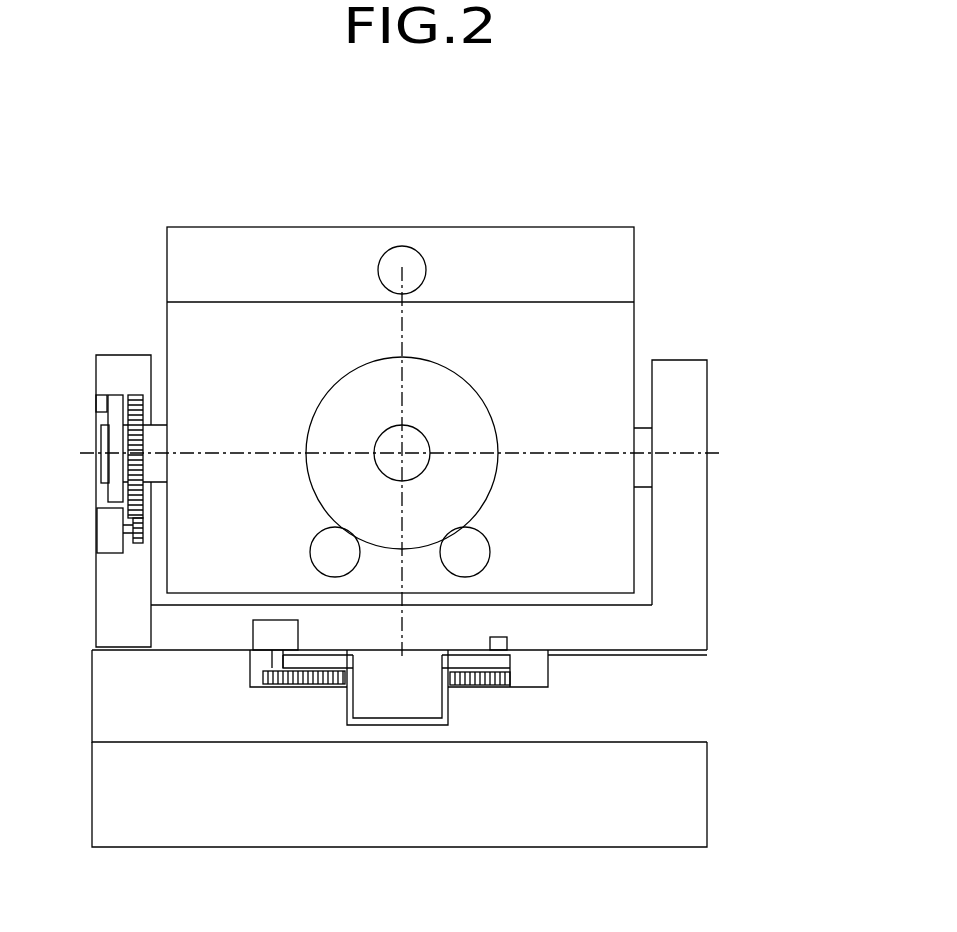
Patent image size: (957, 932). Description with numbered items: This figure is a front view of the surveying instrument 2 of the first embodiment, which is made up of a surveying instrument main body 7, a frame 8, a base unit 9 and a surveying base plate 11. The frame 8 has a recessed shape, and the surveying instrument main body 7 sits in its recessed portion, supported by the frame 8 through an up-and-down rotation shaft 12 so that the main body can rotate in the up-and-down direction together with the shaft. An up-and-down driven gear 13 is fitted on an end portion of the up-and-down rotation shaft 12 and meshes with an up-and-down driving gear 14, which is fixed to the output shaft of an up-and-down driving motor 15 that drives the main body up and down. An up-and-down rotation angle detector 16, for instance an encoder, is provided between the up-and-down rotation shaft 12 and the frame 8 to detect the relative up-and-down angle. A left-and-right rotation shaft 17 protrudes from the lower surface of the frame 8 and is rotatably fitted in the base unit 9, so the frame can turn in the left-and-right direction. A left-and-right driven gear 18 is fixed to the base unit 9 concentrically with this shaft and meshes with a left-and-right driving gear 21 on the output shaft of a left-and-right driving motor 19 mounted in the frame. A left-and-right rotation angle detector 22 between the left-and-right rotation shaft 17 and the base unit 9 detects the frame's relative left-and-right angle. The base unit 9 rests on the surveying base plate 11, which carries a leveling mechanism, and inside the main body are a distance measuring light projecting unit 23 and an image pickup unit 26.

The surveying instrument 2 is at (351, 191).
The surveying instrument main body 7 is at (525, 227).
The frame 8 is at (683, 360).
The base unit 9 is at (705, 717).
The surveying base plate 11 is at (705, 813).
The up-and-down rotation shaft 12 is at (640, 428).
The up-and-down driven gear 13 is at (138, 395).
The up-and-down driving gear 14 is at (138, 545).
The up-and-down driving motor 15 is at (101, 556).
The up-and-down rotation angle detector 16 is at (118, 376).
The left-and-right rotation shaft 17 is at (448, 703).
The left-and-right driven gear 18 is at (513, 682).
The left-and-right driving motor 19 is at (253, 633).
The left-and-right driving gear 21 is at (263, 676).
The left-and-right rotation angle detector 22 is at (531, 644).
The distance measuring light projecting unit 23 is at (481, 383).
The image pickup unit 26 is at (363, 268).